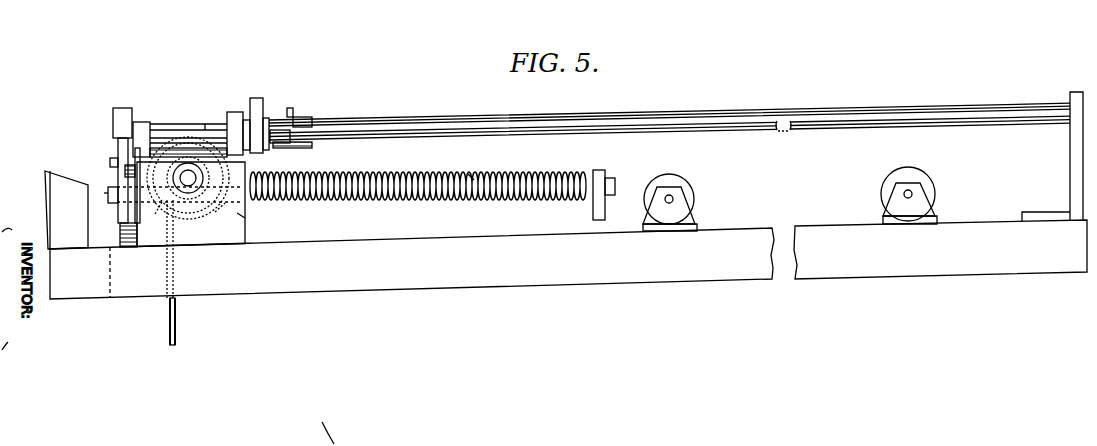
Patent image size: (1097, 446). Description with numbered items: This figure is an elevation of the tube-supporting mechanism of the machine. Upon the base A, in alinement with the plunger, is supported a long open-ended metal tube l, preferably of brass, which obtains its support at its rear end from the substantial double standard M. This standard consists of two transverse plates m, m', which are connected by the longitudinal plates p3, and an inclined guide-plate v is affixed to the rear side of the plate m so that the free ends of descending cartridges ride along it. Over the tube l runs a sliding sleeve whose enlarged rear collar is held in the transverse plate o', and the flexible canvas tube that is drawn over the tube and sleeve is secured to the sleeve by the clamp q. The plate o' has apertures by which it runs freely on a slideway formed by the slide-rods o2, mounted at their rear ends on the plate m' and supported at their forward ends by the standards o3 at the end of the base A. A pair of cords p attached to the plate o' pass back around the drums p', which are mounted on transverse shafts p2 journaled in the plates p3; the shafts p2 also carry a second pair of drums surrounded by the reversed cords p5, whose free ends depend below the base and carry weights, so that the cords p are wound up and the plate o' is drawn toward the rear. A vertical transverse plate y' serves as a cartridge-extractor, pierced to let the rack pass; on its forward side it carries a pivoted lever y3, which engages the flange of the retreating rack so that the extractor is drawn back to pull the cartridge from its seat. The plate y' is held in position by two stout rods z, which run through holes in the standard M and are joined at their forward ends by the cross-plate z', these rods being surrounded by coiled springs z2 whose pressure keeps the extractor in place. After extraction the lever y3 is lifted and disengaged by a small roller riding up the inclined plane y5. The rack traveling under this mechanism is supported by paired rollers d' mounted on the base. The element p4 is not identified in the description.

The base A is at (568, 235).
The double standard M is at (210, 245).
The inclined guide-plate v is at (113, 127).
The transverse plate m is at (180, 125).
The transverse plate m' is at (238, 123).
The transverse plate o' is at (263, 116).
The slide-rods o2 is at (792, 141).
The standards o3 is at (1076, 92).
The cords p is at (255, 132).
The drums p' is at (154, 214).
The transverse shafts p2 is at (196, 178).
The longitudinal plates p3 is at (245, 218).
The lever pivot p4 is at (225, 212).
The reversed cords p5 is at (176, 326).
The clamp q is at (303, 117).
The tube l is at (783, 118).
The rods z is at (343, 197).
The cross-plate z' is at (594, 195).
The coiled springs z2 is at (468, 174).
The vertical transverse plate y' is at (118, 230).
The pivoted lever y3 is at (110, 162).
The inclined plane y5 is at (66, 210).
The rollers d' is at (790, 199).